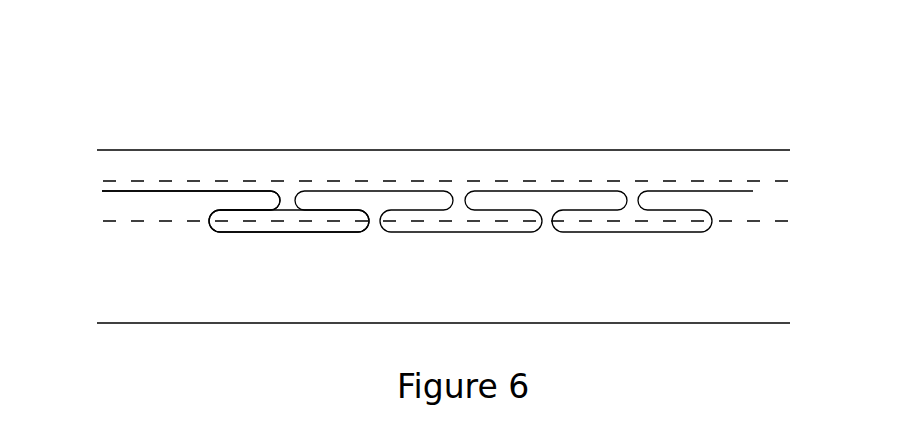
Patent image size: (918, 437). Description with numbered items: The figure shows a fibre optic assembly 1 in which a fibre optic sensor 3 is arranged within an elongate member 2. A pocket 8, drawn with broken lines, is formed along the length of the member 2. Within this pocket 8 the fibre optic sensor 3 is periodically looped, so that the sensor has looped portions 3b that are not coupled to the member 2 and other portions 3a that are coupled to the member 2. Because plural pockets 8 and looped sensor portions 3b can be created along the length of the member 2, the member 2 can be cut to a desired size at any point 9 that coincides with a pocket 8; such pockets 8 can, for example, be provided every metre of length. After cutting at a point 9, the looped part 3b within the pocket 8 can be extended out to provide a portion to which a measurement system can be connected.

The fibre optic assembly 1 is at (687, 150).
The member 2 is at (760, 307).
The fibre optic sensor 3 is at (723, 191).
The portions coupled to the member 3a is at (247, 232).
The looped portions not coupled to the member 3b is at (180, 191).
The pocket 8 is at (125, 208).
The cutting point 9 is at (383, 128).